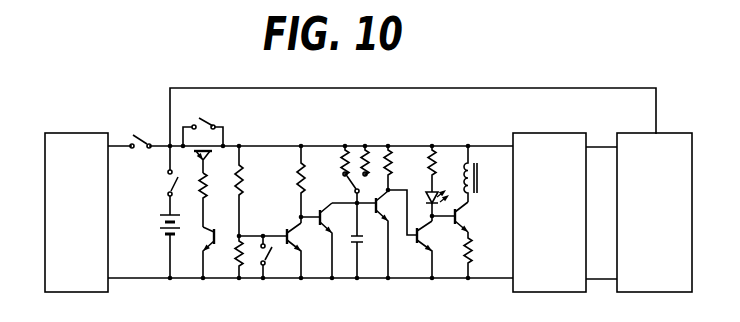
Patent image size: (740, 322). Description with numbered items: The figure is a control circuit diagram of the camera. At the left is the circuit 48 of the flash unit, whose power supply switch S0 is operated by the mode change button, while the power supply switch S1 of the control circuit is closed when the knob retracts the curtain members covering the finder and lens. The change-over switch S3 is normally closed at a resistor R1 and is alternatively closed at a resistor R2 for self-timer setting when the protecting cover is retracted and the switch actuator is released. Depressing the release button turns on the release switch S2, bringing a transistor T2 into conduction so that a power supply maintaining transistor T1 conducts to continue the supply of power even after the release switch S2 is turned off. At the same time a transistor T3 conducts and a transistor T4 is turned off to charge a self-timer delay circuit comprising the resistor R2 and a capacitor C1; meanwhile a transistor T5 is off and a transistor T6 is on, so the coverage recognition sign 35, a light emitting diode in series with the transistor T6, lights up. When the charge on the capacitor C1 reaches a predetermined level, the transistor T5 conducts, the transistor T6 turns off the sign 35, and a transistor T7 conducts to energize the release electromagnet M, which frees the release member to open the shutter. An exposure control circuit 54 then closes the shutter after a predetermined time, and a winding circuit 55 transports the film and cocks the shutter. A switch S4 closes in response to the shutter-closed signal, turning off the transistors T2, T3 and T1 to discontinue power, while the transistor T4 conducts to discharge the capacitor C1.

The flash unit circuit 48 is at (60, 236).
The exposure control circuit 54 is at (536, 236).
The winding circuit 55 is at (639, 236).
The coverage recognition sign 35 is at (437, 194).
The power supply switch S0 is at (141, 128).
The power supply switch S1 is at (160, 212).
The release switch S2 is at (203, 117).
The change-over switch S3 is at (342, 186).
The switch S4 is at (276, 273).
The power supply maintaining transistor T1 is at (217, 159).
The transistor T2 is at (218, 238).
The transistor T3 is at (284, 238).
The transistor T4 is at (317, 240).
The transistor T5 is at (390, 200).
The transistor T6 is at (414, 249).
The transistor T7 is at (477, 217).
The resistor R1 is at (344, 157).
The resistor R2 is at (366, 157).
The capacitor C1 is at (371, 240).
The release electromagnet M is at (483, 174).